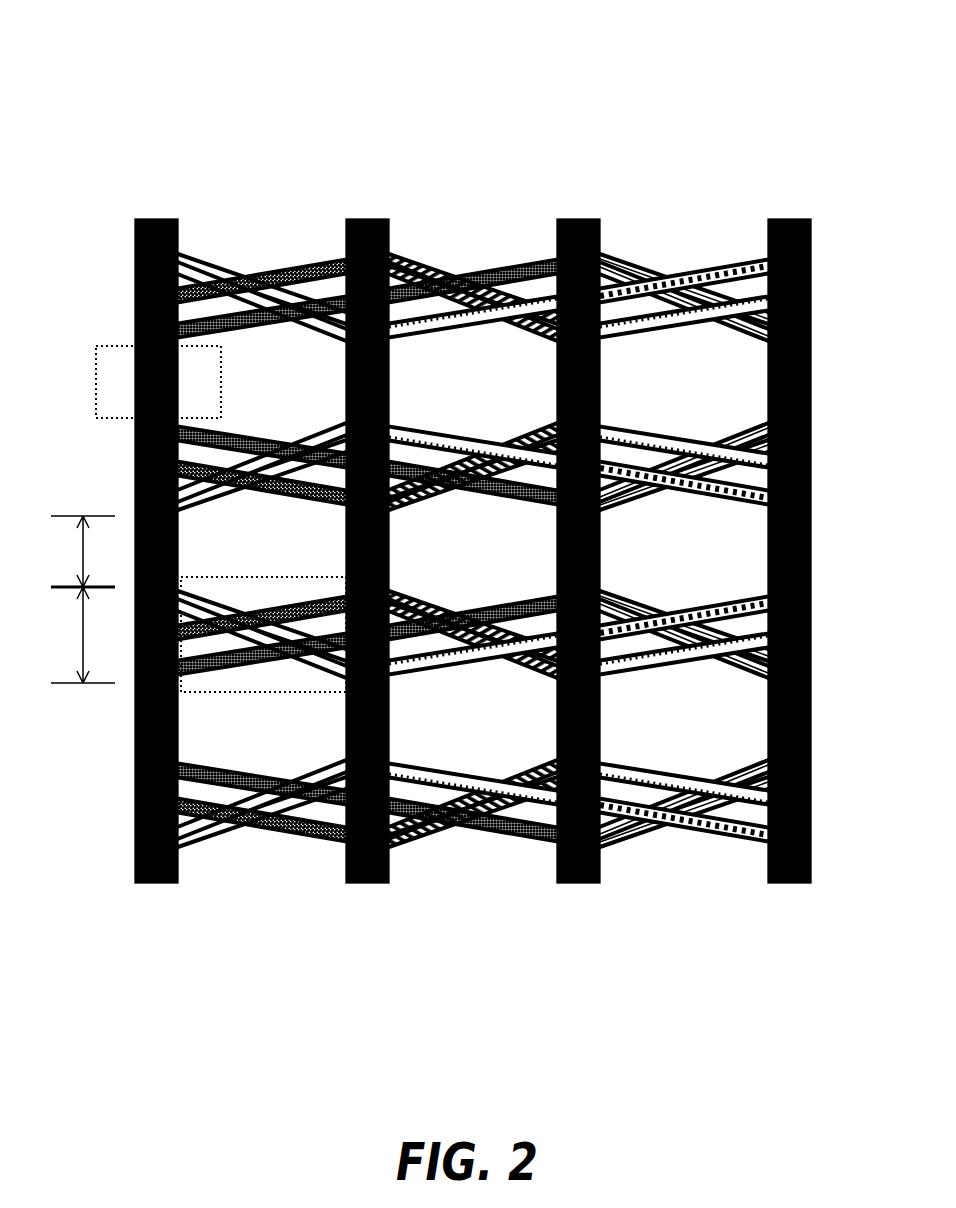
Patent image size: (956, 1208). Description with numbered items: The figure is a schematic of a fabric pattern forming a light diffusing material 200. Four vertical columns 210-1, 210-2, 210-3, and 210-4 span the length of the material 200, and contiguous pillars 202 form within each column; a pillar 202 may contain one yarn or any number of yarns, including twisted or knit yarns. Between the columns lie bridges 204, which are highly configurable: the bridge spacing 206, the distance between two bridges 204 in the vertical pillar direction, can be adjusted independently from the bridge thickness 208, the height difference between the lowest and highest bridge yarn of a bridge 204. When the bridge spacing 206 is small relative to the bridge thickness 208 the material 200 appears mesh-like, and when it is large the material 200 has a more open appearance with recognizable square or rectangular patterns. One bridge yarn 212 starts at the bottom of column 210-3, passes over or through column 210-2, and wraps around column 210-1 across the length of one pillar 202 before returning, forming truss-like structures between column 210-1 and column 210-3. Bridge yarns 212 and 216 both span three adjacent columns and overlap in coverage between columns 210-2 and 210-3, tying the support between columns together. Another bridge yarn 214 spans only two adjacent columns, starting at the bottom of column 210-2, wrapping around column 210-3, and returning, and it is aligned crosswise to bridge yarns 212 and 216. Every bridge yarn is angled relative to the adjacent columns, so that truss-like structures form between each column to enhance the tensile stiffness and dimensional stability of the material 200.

The light diffusing material 200 is at (205, 78).
The pillar 202 is at (118, 332).
The bridge 204 is at (248, 562).
The bridge spacing 206 is at (83, 551).
The bridge thickness 208 is at (83, 635).
The column 210-1 is at (160, 208).
The column 210-2 is at (374, 208).
The column 210-3 is at (579, 208).
The column 210-4 is at (780, 208).
The bridge yarn 212 is at (485, 252).
The bridge yarn 214 is at (504, 324).
The bridge yarn 216 is at (405, 332).